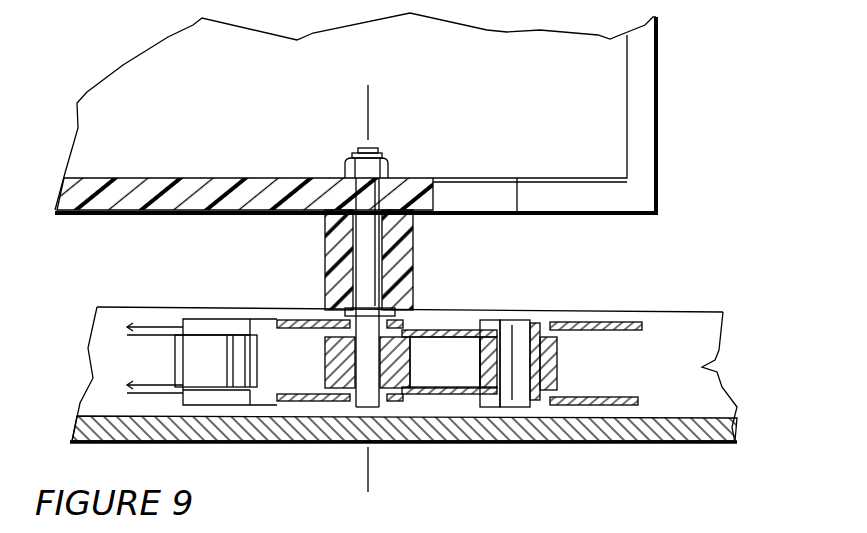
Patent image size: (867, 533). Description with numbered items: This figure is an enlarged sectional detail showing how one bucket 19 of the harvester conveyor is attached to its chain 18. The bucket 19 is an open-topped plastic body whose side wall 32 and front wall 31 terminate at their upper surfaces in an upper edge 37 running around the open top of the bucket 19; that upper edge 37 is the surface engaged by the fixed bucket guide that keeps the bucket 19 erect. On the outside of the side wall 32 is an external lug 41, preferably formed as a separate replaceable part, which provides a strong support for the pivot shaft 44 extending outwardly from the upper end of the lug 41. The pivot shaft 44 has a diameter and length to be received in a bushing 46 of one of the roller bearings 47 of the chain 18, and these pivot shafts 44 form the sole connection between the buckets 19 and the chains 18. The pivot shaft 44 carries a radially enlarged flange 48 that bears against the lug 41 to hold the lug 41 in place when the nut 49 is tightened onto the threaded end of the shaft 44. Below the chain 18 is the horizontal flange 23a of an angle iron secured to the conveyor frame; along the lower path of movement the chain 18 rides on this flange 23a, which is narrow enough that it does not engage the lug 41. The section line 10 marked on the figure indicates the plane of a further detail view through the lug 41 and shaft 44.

The bucket 19 is at (513, 26).
The section line 10 is at (385, 98).
The nut 49 is at (390, 168).
The upper edge 37 is at (627, 117).
The side wall 32 is at (659, 145).
The front wall 31 is at (538, 214).
The lug 41 is at (330, 260).
The flange 48 is at (398, 311).
The bushing 46 is at (517, 357).
The chain 18 is at (567, 308).
The horizontal flange 23a is at (717, 362).
The pivot shaft 44 is at (326, 362).
The roller bearing 47 is at (483, 365).